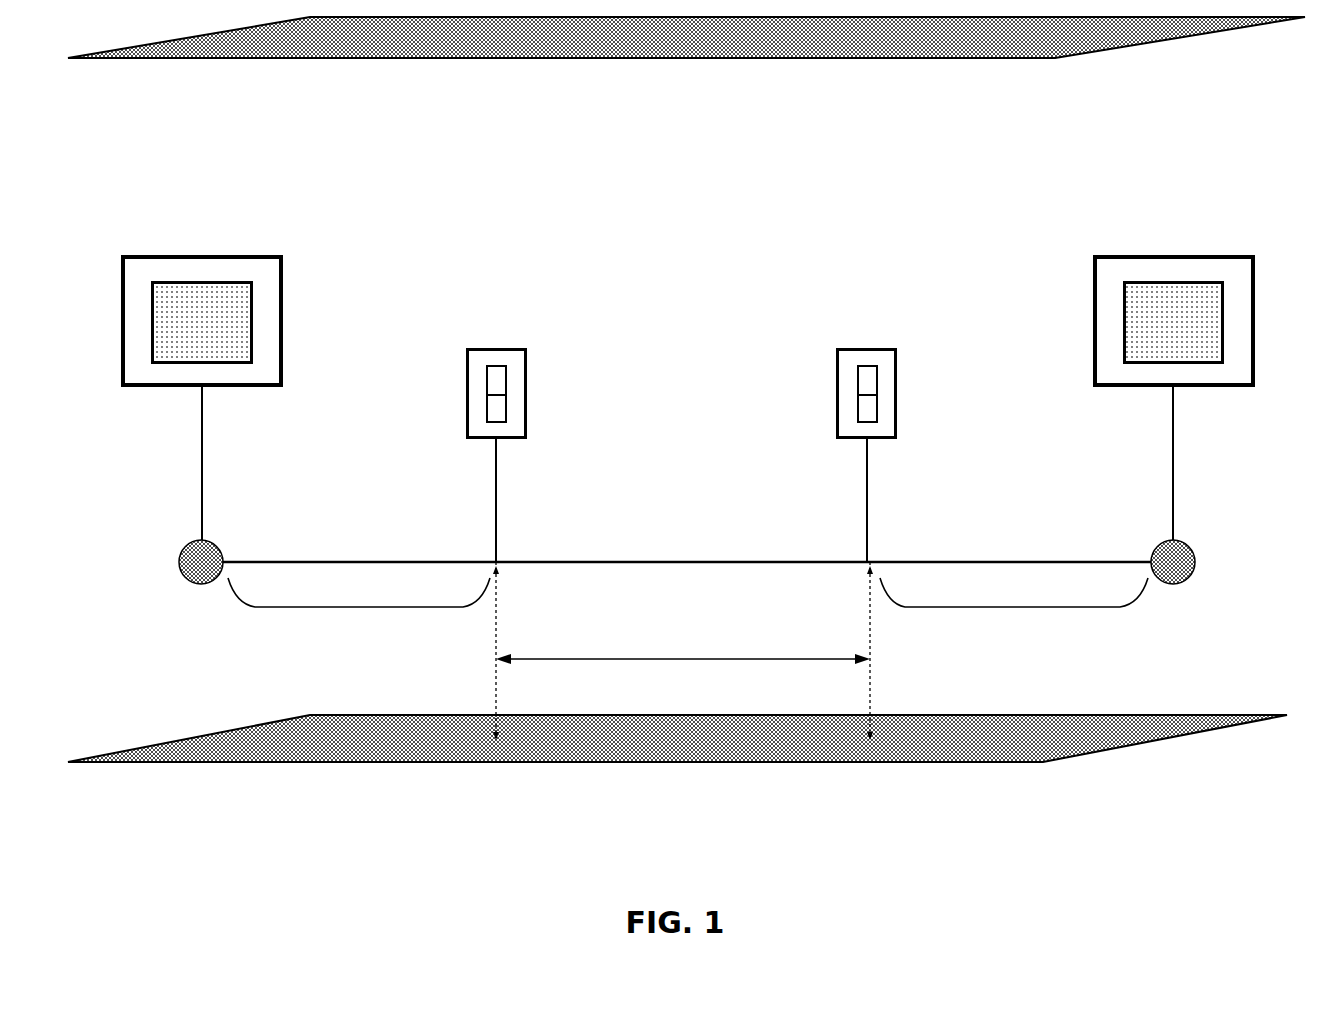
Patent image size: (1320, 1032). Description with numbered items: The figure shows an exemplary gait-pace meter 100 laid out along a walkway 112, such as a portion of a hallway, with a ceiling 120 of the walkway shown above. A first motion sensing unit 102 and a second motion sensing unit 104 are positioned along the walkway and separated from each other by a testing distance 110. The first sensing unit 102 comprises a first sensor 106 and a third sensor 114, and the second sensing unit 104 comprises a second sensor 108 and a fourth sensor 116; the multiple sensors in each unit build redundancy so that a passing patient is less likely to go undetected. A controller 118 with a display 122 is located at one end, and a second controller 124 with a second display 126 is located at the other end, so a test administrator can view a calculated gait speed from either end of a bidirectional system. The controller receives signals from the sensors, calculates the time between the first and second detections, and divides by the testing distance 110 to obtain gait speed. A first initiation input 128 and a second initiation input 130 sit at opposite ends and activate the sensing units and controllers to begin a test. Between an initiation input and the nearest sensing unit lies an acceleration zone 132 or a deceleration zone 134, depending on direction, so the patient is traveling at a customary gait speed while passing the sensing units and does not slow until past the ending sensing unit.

The gait-pace meter 100 is at (210, 150).
The first motion sensing unit 102 is at (522, 348).
The second motion sensing unit 104 is at (885, 348).
The first sensor 106 is at (496, 383).
The second sensor 108 is at (868, 382).
The testing distance 110 is at (683, 651).
The walkway 112 is at (1110, 745).
The third sensor 114 is at (497, 412).
The fourth sensor 116 is at (865, 410).
The controller 118 is at (270, 256).
The ceiling 120 is at (1163, 40).
The display 122 is at (192, 346).
The second controller 124 is at (1230, 256).
The second display 126 is at (1146, 297).
The first initiation input 128 is at (200, 585).
The second initiation input 130 is at (1188, 578).
The acceleration zone 132 is at (359, 607).
The deceleration zone 134 is at (1013, 607).